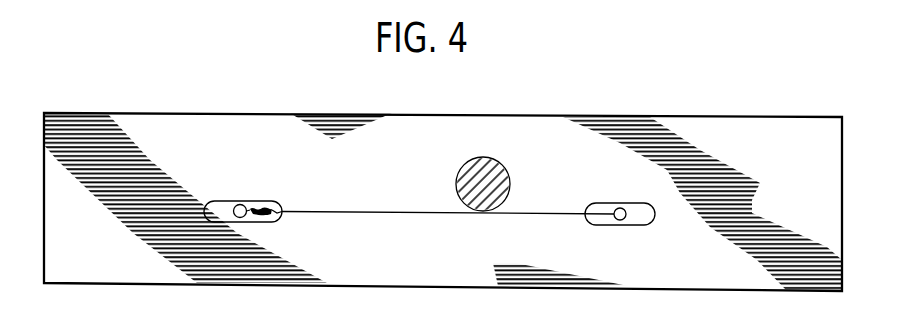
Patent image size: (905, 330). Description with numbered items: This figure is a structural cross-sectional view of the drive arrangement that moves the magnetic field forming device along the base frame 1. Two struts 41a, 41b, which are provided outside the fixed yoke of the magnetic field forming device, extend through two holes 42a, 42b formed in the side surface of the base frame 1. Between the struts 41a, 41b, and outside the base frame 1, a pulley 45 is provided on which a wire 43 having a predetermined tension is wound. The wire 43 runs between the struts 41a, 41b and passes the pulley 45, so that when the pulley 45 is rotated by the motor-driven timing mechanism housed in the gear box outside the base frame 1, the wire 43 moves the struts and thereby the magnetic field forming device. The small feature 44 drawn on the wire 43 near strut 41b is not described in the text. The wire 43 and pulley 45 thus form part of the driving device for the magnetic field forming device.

The base frame 1 is at (750, 117).
The strut 41a is at (617, 223).
The strut 41b is at (240, 199).
The hole 42a is at (650, 226).
The hole 42b is at (212, 201).
The wire 43 is at (397, 214).
The knot 44 is at (267, 215).
The pulley 45 is at (462, 175).